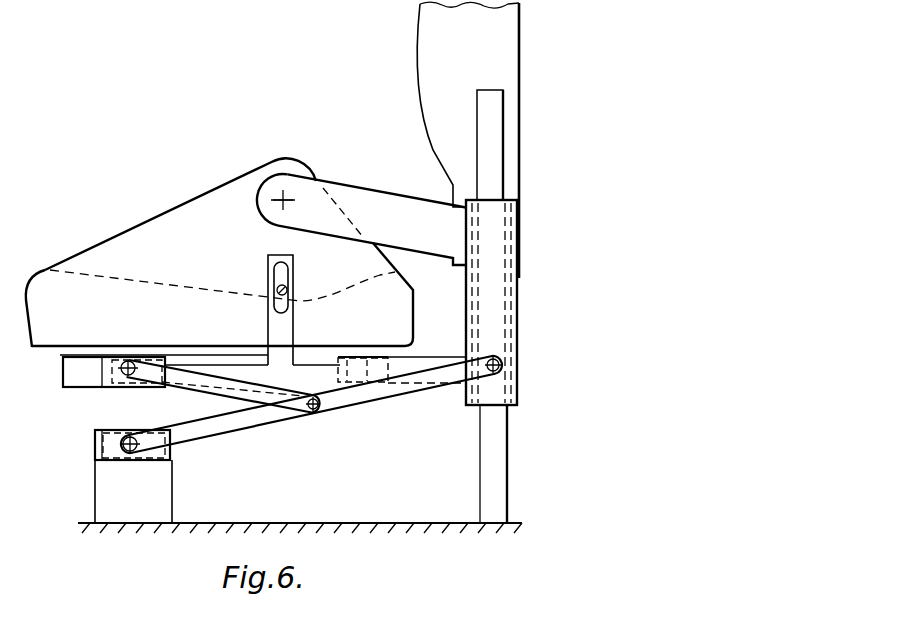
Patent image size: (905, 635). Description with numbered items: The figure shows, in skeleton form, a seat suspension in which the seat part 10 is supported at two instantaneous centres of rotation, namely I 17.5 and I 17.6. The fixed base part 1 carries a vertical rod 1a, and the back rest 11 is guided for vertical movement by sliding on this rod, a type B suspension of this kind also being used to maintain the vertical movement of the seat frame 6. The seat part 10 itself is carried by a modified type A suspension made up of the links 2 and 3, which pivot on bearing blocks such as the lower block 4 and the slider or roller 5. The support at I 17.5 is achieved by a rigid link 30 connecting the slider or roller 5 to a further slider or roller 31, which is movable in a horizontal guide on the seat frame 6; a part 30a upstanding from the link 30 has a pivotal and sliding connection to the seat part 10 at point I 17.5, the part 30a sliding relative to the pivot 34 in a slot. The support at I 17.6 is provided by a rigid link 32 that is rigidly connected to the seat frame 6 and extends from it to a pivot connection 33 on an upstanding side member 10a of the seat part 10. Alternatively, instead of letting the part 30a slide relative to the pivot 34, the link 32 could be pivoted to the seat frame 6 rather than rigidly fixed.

The base part 1 is at (135, 511).
The vertical rod 1a is at (490, 450).
The link 2 is at (220, 390).
The link 3 is at (245, 418).
The lower bearing block 4 is at (102, 447).
The slider or roller 5 is at (118, 381).
The seat frame 6 is at (466, 338).
The seat part 10 is at (110, 329).
The upstanding side member 10a is at (207, 207).
The back rest 11 is at (496, 53).
The rigid link 30 is at (318, 368).
The upstanding part 30a is at (293, 323).
The slider or roller 31 is at (353, 382).
The rigid link 32 is at (380, 207).
The pivot connection 33 is at (285, 198).
The pivot 34 is at (293, 283).
The instantaneous centre of rotation I7.5 17.5 is at (277, 290).
The instantaneous centre of rotation I7.6 17.6 is at (285, 201).